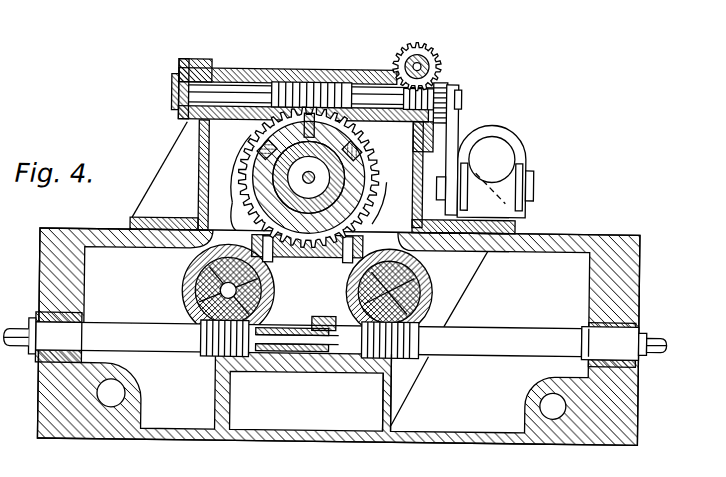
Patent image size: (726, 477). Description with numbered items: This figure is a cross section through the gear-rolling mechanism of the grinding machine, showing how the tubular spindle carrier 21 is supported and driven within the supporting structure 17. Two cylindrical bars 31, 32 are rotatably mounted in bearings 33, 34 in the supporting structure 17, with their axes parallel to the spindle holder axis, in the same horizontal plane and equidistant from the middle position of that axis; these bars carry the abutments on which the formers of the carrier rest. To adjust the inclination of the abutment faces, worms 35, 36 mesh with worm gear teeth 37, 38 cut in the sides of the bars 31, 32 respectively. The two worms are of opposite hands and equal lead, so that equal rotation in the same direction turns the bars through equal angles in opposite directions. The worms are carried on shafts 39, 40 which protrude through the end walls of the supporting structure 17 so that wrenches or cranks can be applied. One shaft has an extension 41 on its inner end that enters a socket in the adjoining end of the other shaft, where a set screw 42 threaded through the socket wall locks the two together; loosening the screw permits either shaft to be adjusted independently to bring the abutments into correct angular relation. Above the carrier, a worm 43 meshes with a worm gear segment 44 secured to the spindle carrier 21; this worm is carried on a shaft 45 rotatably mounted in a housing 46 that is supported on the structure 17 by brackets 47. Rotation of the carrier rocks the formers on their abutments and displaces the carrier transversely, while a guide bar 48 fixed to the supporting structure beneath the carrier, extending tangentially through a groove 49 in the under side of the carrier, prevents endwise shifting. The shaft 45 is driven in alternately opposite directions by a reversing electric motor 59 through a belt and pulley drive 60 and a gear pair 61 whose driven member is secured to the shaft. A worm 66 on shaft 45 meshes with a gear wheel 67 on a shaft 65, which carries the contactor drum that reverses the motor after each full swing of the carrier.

The supporting structure 17 is at (112, 226).
The tubular carrier 21 is at (370, 192).
The cylindrical bar 31 is at (405, 296).
The cylindrical bar 32 is at (196, 288).
The bearing 33 is at (423, 268).
The bearing 34 is at (192, 271).
The worm 35 is at (382, 372).
The worm 36 is at (212, 352).
The worm gear teeth 37 is at (414, 330).
The worm gear teeth 38 is at (195, 309).
The shaft 39 is at (527, 334).
The shaft 40 is at (114, 326).
The extension 41 is at (280, 350).
The set screw 42 is at (301, 322).
The worm 43 is at (325, 81).
The worm gear segment 44 is at (248, 143).
The shaft 45 is at (254, 91).
The housing 46 is at (230, 67).
The bracket 47 is at (180, 132).
The guide bar 48 is at (318, 258).
The groove 49 is at (252, 197).
The reversing electric motor 59 is at (508, 137).
The belt and pulley drive 60 is at (452, 133).
The gear pair 61 is at (443, 84).
The shaft 65 is at (421, 50).
The worm 66 is at (410, 118).
The gear wheel 67 is at (432, 53).